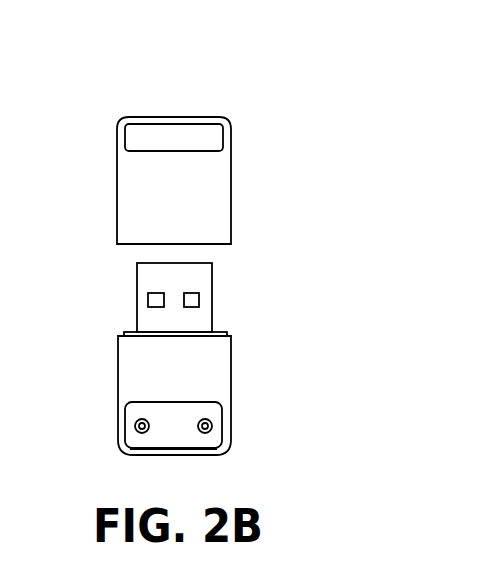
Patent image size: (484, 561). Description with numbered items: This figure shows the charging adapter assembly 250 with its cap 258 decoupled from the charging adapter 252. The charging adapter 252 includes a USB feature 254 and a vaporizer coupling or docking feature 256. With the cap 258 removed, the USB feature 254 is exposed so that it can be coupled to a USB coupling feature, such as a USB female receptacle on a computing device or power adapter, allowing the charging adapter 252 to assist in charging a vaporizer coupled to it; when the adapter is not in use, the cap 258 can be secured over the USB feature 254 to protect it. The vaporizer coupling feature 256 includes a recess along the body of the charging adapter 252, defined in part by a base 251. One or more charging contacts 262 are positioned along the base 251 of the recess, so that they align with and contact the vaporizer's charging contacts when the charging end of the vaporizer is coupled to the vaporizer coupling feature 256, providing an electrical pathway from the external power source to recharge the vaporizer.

The charging adapter assembly 250 is at (125, 98).
The cap 258 is at (233, 163).
The USB feature 254 is at (192, 275).
The charging adapter 252 is at (228, 373).
The base 251 is at (164, 412).
The charging contacts 262 is at (136, 426).
The vaporizer coupling feature 256 is at (157, 442).